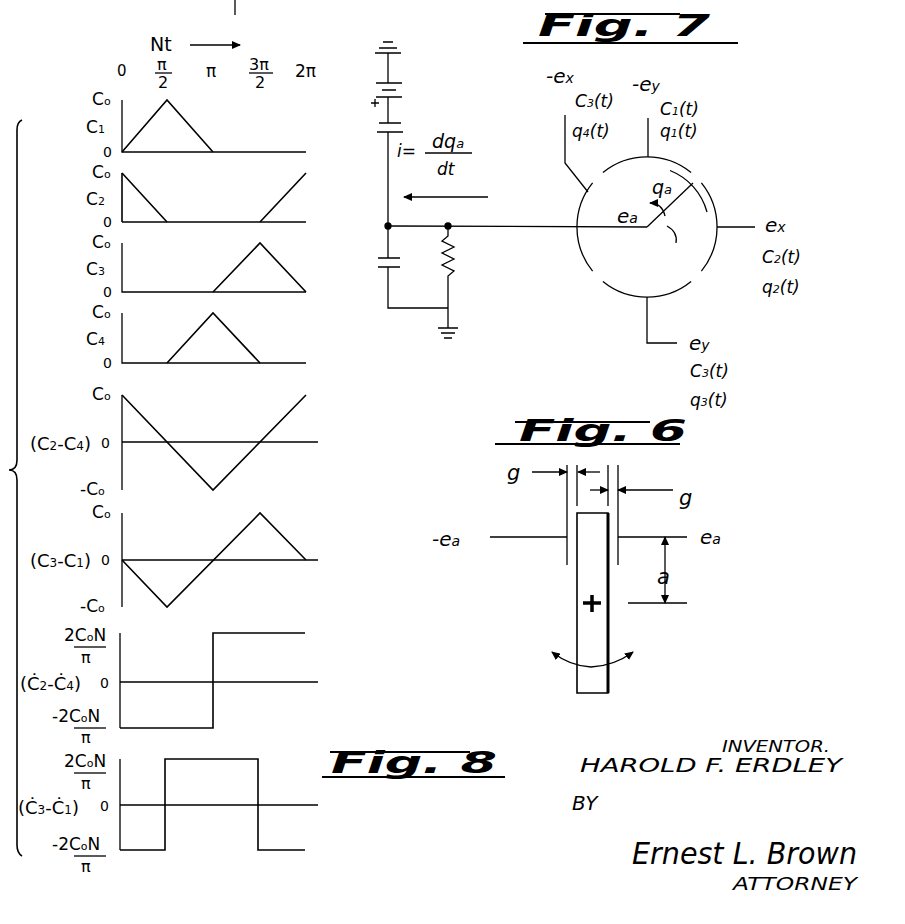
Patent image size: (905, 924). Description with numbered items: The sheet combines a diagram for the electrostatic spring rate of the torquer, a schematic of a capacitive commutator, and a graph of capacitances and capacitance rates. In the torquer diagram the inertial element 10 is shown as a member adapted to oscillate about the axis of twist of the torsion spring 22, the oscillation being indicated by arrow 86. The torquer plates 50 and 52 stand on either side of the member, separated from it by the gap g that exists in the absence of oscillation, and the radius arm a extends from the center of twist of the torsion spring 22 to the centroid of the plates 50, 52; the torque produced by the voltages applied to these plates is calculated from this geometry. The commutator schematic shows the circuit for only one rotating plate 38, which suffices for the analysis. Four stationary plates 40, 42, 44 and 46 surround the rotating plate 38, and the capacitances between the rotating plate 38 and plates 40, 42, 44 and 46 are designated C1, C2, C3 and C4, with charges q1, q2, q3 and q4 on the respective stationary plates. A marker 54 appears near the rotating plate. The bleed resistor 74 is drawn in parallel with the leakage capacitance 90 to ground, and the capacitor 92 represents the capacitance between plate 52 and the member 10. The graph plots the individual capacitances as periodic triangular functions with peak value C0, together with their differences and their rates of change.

In FIG. 7, the inertial element 10 is at (397, 127).
In FIG. 6, the inertial element 10 is at (600, 628).
In FIG. 7, the capacitor 92 is at (407, 131).
In FIG. 7, the torquer plate 52 is at (379, 136).
In FIG. 6, the torquer plate 52 is at (622, 537).
In FIG. 7, the leakage capacitance 90 is at (380, 270).
In FIG. 7, the bleed resistor 74 is at (458, 266).
In FIG. 7, the plate 46 is at (578, 256).
In FIG. 7, the plate 44 is at (633, 300).
In FIG. 7, the plate 40 is at (698, 159).
In FIG. 7, the rotating plate 38 is at (703, 194).
In FIG. 7, the plate 42 is at (716, 212).
In FIG. 7, the angular displacement indicator 54 is at (686, 245).
In FIG. 6, the torquer plate 50 is at (565, 552).
In FIG. 6, the torsion spring 22 is at (588, 610).
In FIG. 6, the arrow 86 is at (619, 665).